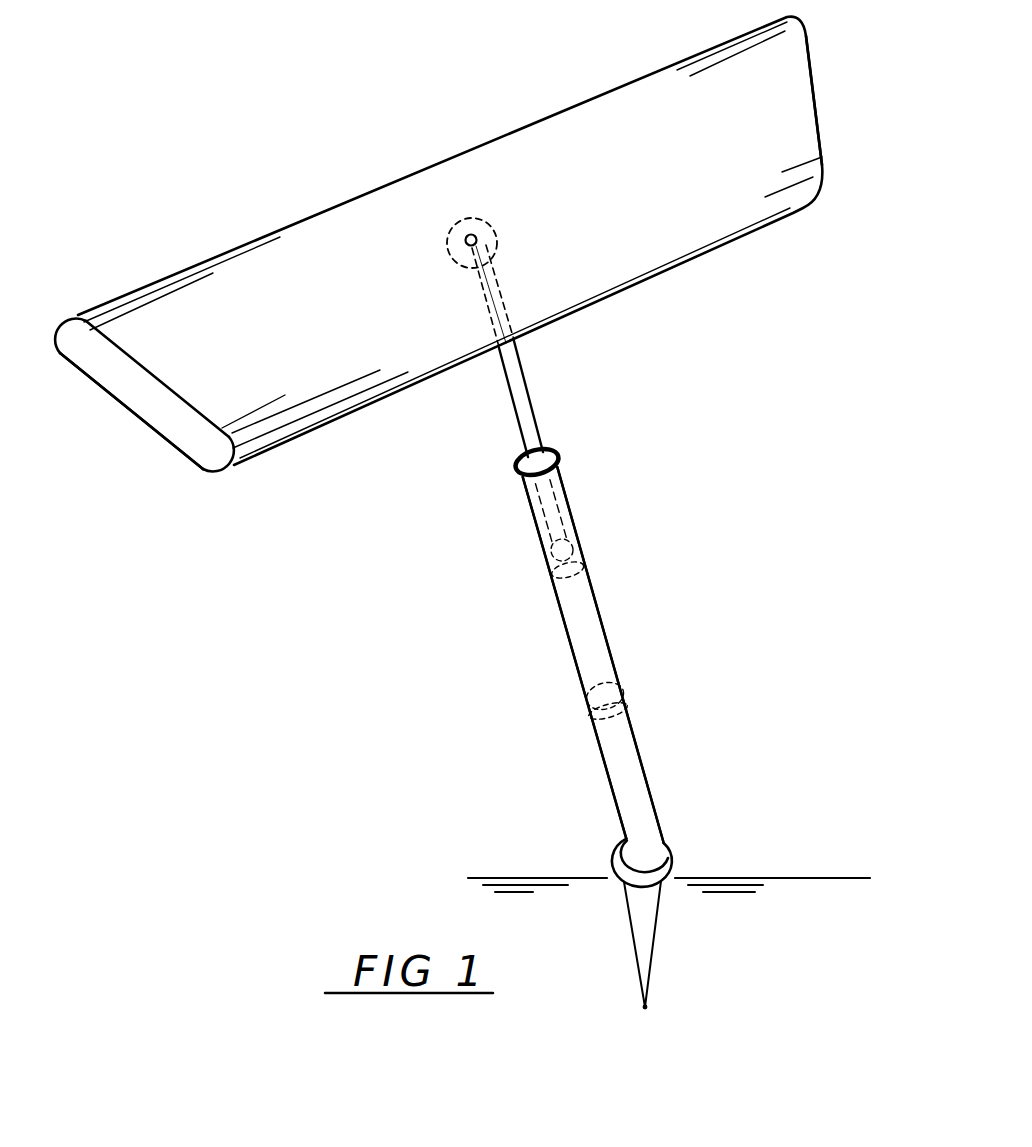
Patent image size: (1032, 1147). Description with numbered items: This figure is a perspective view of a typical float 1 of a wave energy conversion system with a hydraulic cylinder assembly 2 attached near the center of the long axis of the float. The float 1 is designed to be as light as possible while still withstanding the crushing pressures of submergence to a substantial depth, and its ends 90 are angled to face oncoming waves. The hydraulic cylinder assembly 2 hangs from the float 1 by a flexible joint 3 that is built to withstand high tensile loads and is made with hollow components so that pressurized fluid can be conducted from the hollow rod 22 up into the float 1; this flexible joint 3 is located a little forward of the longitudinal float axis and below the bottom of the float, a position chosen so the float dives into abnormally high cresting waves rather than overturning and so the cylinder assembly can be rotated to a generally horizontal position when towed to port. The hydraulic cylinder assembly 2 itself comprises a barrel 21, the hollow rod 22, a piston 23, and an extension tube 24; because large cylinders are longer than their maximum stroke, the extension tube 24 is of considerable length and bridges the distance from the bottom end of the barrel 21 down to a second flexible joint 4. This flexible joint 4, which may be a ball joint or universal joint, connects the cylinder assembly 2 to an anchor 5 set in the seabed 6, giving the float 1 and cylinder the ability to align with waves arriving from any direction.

The float 1 is at (388, 217).
The hydraulic cylinder assembly 2 is at (492, 242).
The flexible joint 3 is at (463, 245).
The flexible joint 4 is at (672, 855).
The anchor 5 is at (645, 945).
The seabed 6 is at (740, 880).
The barrel 21 is at (568, 600).
The hollow rod 22 is at (518, 390).
The piston 23 is at (578, 546).
The extension tube 24 is at (623, 752).
The ends 90 is at (812, 97).